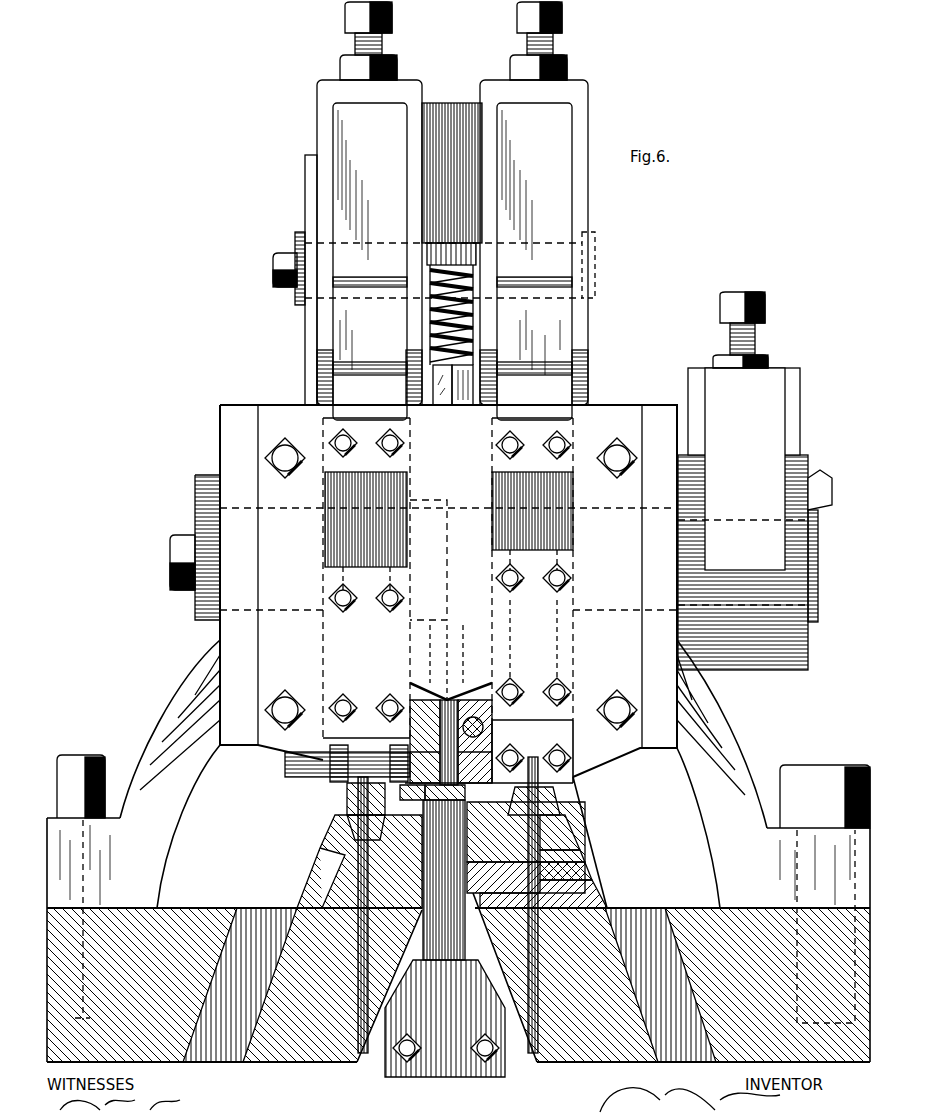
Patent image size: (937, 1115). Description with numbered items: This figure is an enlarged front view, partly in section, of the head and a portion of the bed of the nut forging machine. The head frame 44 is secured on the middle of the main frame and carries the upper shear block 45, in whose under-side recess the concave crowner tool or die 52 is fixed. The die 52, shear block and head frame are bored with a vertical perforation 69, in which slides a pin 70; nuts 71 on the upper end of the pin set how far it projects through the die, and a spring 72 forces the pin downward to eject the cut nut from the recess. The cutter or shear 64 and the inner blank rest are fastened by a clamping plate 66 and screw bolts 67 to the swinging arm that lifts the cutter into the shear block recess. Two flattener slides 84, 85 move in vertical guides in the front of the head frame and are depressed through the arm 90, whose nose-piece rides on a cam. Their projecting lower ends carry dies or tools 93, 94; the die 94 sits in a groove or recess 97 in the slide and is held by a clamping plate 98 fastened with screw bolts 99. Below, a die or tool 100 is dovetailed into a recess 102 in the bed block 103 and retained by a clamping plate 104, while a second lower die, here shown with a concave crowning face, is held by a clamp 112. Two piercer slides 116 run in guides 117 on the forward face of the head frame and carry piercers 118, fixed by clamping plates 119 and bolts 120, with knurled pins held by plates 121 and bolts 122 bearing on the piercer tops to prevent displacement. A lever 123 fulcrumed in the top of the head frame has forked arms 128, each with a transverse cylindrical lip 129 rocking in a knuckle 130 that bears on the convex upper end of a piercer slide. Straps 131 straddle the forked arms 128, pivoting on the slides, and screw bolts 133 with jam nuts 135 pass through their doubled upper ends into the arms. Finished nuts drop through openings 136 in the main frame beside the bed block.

The head frame 44 is at (435, 501).
The upper shear block 45 is at (420, 700).
The concave crowner tool or die 52 is at (345, 788).
The cutter or shear 64 is at (420, 798).
The clamping plate 66 is at (430, 972).
The screw bolts 67 is at (478, 1080).
The vertical perforation 69 is at (458, 793).
The pin 70 is at (476, 323).
The nuts 71 is at (470, 370).
The spring 72 is at (478, 272).
The flattener slide 84 is at (345, 783).
The flattener slide 85 is at (560, 795).
The arm 90 is at (755, 481).
The die or tool 93 is at (345, 795).
The die or tool 94 is at (548, 790).
The groove or recess 97 is at (575, 777).
The clamping plate 98 is at (558, 745).
The screw bolts 99 is at (512, 745).
The die or tool 100 is at (575, 820).
The recess 102 is at (580, 836).
The bed block 103 is at (526, 847).
The clamping plate 104 is at (585, 851).
The clamp 112 is at (335, 840).
The piercer slides 116 is at (535, 512).
The guides 117 is at (423, 591).
The piercers 118 is at (345, 813).
The clamping plates 119 is at (448, 600).
The bolts 120 is at (380, 606).
The plates 121 is at (451, 458).
The bolts 122 is at (350, 438).
The lever 123 is at (452, 163).
The forked lever arms 128 is at (452, 261).
The transverse cylindrical lip 129 is at (380, 277).
The knuckle 130 is at (452, 332).
The straps 131 is at (317, 125).
The screw bolts 133 is at (517, 14).
The jam nuts 135 is at (510, 64).
The openings 136 is at (262, 925).